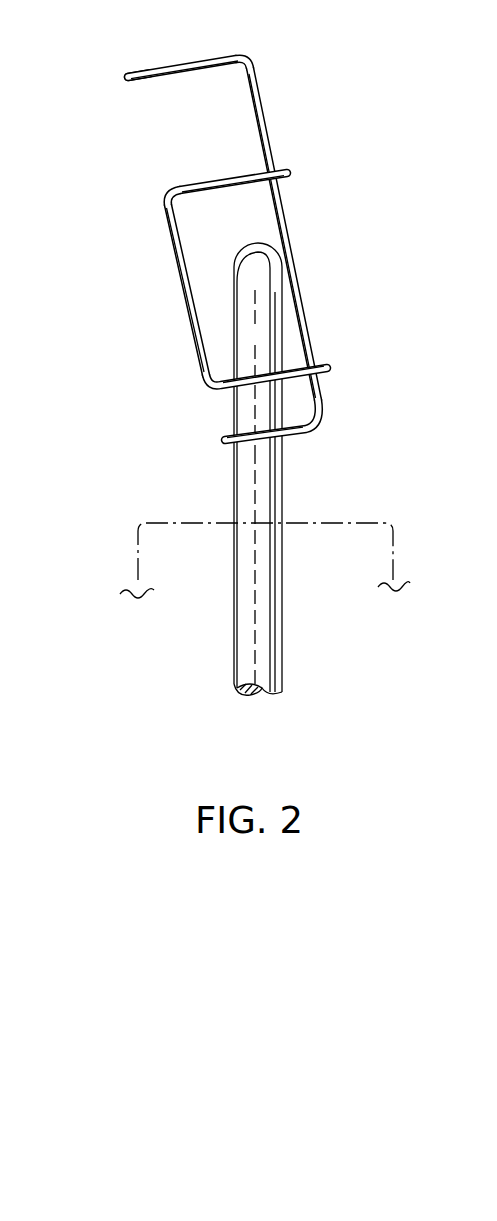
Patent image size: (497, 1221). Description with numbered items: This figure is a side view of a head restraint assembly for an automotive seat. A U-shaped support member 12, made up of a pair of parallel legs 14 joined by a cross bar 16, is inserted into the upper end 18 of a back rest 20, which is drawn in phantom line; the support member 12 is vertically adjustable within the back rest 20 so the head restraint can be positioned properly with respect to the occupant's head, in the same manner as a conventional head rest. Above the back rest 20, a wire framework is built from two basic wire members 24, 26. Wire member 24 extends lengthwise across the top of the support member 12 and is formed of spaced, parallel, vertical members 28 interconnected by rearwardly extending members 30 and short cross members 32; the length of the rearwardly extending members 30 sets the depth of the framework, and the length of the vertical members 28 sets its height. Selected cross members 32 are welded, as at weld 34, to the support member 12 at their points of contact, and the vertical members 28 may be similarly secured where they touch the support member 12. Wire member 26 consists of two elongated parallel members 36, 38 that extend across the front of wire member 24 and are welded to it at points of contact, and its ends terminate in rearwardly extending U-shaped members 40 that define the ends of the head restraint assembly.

The support member 12 is at (250, 452).
The parallel legs 14 is at (243, 628).
The cross bar 16 is at (250, 244).
The upper end 18 is at (242, 542).
The back rest 20 is at (135, 569).
The wire member 24 is at (249, 51).
The wire member 26 is at (165, 197).
The vertical members 28 is at (292, 211).
The rearwardly extending members 30 is at (186, 60).
The cross members 32 is at (123, 72).
The weld 34 is at (232, 451).
The elongated parallel member 36 is at (291, 168).
The elongated parallel member 38 is at (332, 365).
The U-shaped members 40 is at (180, 297).